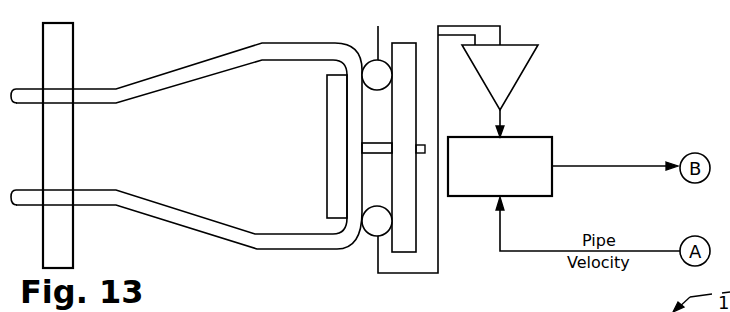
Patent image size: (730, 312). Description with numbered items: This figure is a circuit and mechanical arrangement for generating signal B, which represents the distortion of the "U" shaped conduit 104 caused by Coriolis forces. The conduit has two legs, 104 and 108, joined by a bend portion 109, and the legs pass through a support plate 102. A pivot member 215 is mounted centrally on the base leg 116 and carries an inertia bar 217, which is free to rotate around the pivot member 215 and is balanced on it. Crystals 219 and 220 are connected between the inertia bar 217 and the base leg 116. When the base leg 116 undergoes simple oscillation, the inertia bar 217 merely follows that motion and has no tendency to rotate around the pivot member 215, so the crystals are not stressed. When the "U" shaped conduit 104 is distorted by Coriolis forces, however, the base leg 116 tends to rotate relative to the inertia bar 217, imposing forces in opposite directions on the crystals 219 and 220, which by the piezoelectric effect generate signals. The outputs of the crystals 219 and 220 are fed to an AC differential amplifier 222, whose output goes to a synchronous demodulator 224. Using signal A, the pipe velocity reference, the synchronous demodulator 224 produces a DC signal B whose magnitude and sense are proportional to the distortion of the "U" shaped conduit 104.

The support plate 102 is at (73, 174).
The "U" shaped conduit 104 is at (215, 58).
The flow conduit outlet leg 108 is at (212, 236).
The flow conduit bend portion 109 is at (278, 47).
The base leg 116 is at (352, 117).
The pivot member 215 is at (373, 156).
The inertia bar 217 is at (407, 117).
The crystal 219 is at (363, 237).
The crystal 220 is at (373, 65).
The AC differential amplifier 222 is at (520, 45).
The synchronous demodulator 224 is at (552, 178).